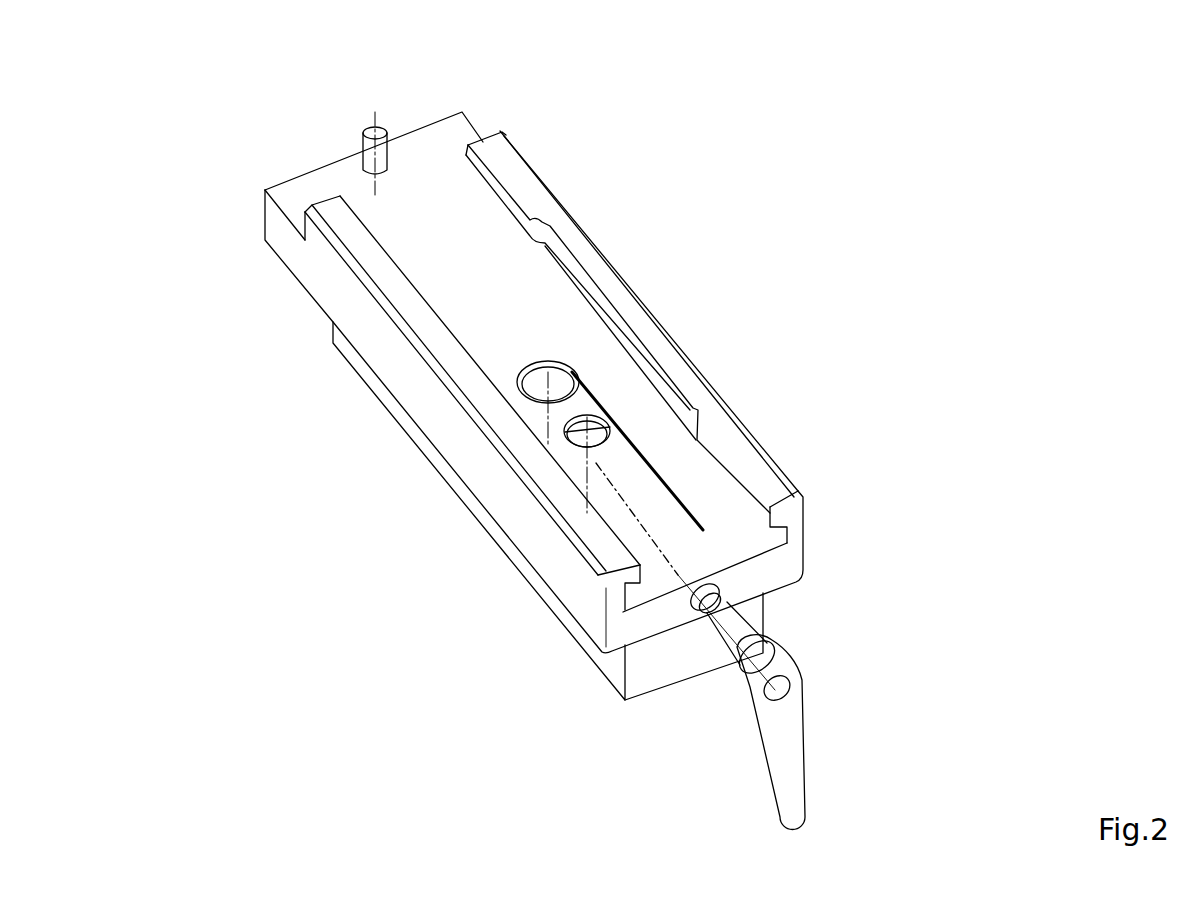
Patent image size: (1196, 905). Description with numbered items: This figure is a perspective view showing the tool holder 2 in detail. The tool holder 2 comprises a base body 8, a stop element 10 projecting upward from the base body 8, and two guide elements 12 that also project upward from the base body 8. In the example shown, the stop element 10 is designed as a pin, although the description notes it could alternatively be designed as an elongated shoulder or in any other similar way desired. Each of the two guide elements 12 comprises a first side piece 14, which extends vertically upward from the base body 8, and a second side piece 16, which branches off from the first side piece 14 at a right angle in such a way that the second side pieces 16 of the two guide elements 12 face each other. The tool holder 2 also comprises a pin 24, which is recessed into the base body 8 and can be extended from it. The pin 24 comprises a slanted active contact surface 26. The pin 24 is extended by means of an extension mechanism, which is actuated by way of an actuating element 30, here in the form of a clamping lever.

The tool holder 2 is at (341, 128).
The base body 8 is at (470, 311).
The stop element 10 is at (378, 152).
The guide elements 12 is at (360, 247).
The first side piece 14 is at (801, 545).
The second side piece 16 is at (803, 497).
The pin 24 is at (598, 410).
The slanted active contact surface 26 is at (605, 410).
The actuating element 30 is at (773, 732).